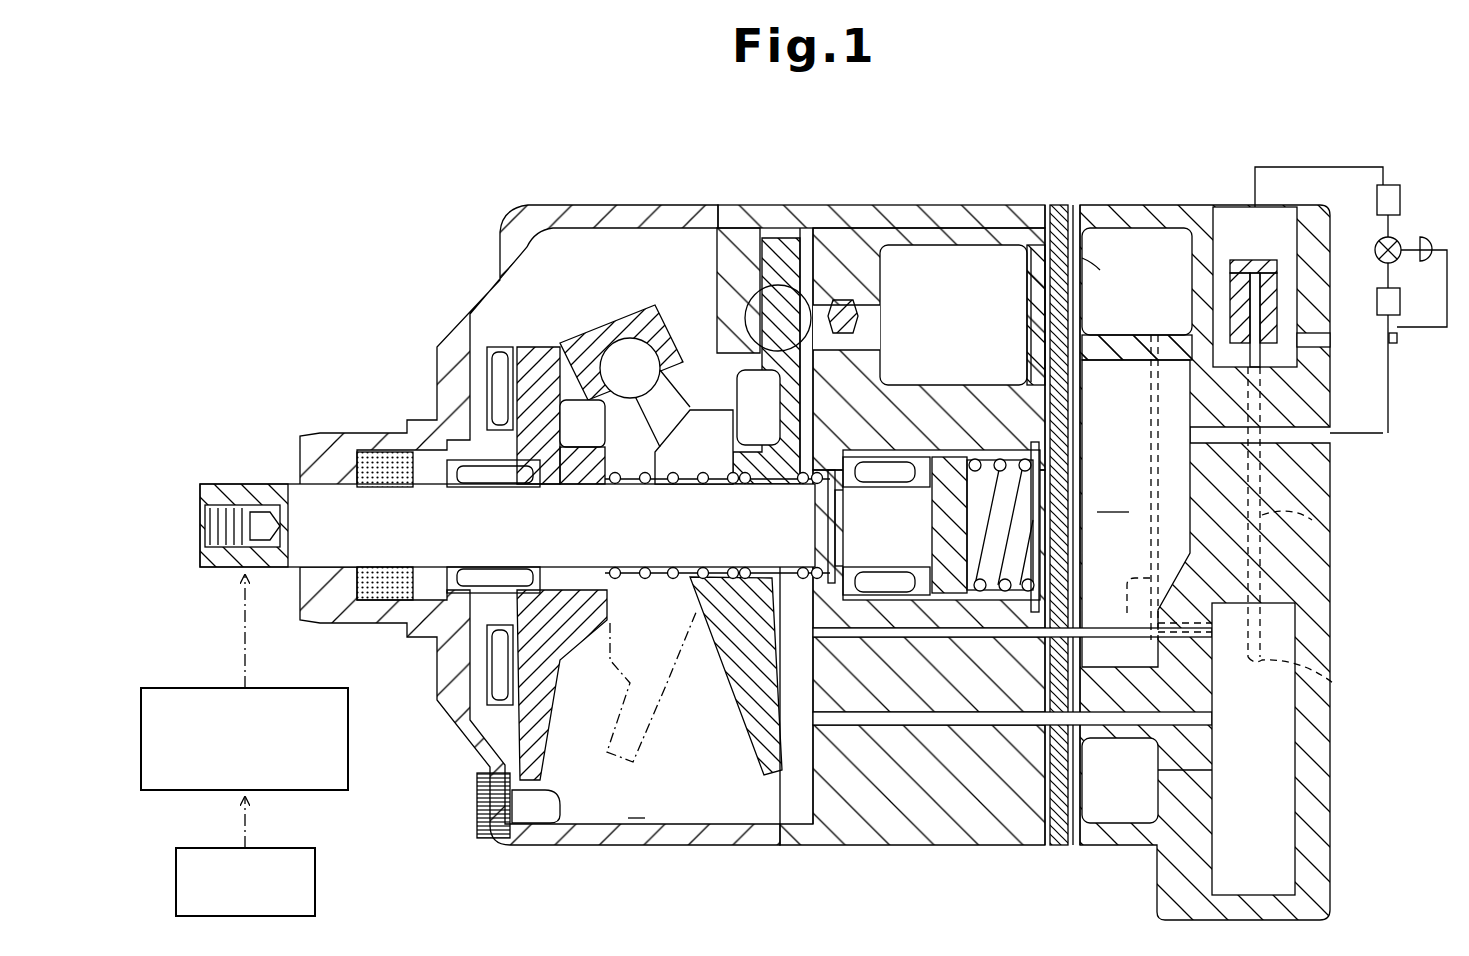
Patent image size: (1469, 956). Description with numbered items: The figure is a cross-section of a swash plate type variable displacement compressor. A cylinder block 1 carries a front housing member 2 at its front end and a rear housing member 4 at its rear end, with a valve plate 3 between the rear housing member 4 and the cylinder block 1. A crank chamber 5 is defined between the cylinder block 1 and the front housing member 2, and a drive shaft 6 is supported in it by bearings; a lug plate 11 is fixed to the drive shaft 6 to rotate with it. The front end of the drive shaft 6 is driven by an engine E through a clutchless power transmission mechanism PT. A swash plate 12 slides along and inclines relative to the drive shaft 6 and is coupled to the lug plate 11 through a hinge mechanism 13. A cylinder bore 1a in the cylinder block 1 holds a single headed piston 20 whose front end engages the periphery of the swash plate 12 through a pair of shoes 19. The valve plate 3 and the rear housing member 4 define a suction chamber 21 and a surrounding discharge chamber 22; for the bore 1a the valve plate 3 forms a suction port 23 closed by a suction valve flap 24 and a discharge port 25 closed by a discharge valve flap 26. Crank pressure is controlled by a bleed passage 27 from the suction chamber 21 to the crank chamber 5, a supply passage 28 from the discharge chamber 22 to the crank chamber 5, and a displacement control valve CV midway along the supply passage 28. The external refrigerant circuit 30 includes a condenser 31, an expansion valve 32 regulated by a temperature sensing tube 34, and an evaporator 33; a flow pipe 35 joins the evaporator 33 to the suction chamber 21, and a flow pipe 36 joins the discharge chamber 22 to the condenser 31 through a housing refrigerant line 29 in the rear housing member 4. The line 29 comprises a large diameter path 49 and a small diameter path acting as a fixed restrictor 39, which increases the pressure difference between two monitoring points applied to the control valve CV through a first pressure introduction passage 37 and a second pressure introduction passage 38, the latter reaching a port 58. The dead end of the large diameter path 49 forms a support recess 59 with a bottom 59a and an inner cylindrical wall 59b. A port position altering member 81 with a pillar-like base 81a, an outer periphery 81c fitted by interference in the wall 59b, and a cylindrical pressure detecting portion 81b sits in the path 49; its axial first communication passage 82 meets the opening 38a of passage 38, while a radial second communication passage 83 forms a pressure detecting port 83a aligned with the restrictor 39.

The cylinder block 1 is at (893, 215).
The cylinder bore 1a is at (940, 240).
The front housing member 2 is at (676, 225).
The valve plate 3 is at (1066, 218).
The rear housing member 4 is at (1125, 225).
The crank chamber 5 is at (717, 646).
The drive shaft 6 is at (672, 582).
The lug plate 11 is at (537, 365).
The swash plate 12 is at (660, 740).
The hinge mechanism 13 is at (604, 322).
The shoes 19 is at (765, 225).
The single headed piston 20 is at (828, 245).
The suction chamber 21 is at (1136, 513).
The discharge chamber 22 is at (1165, 240).
The suction port 23 is at (1082, 388).
The suction valve flap 24 is at (1030, 345).
The discharge port 25 is at (1030, 268).
The discharge valve flap 26 is at (1092, 262).
The bleed passage 27 is at (905, 645).
The supply passage 28 is at (935, 728).
The housing refrigerant line 29 is at (1260, 140).
The external refrigerant circuit 30 is at (1415, 205).
The condenser 31 is at (1389, 185).
The expansion valve 32 is at (1375, 248).
The evaporator 33 is at (1400, 302).
The temperature sensing tube 34 is at (1397, 340).
The flow pipe 35 is at (1372, 440).
The flow pipe 36 is at (1348, 167).
The first pressure introduction passage 37 is at (1160, 613).
The second pressure introduction passage 38 is at (1312, 520).
The opening 38a is at (1192, 392).
The fixed restrictor 39 is at (1225, 222).
The large diameter path 49 is at (1228, 212).
The port 58 is at (1312, 532).
The support recess 59 is at (1330, 340).
The bottom 59a is at (1297, 408).
The inner cylindrical wall 59b is at (1297, 370).
The port position altering member 81 is at (1277, 270).
The base 81a is at (1150, 385).
The pressure detecting portion 81b is at (1282, 258).
The outer periphery 81c is at (1152, 420).
The first communication passage 82 is at (1262, 372).
The second communication passage 83 is at (1215, 300).
The pressure detecting port 83a is at (1233, 262).
The displacement control valve CV is at (1253, 749).
The power transmission mechanism PT is at (348, 738).
The engine E is at (315, 882).